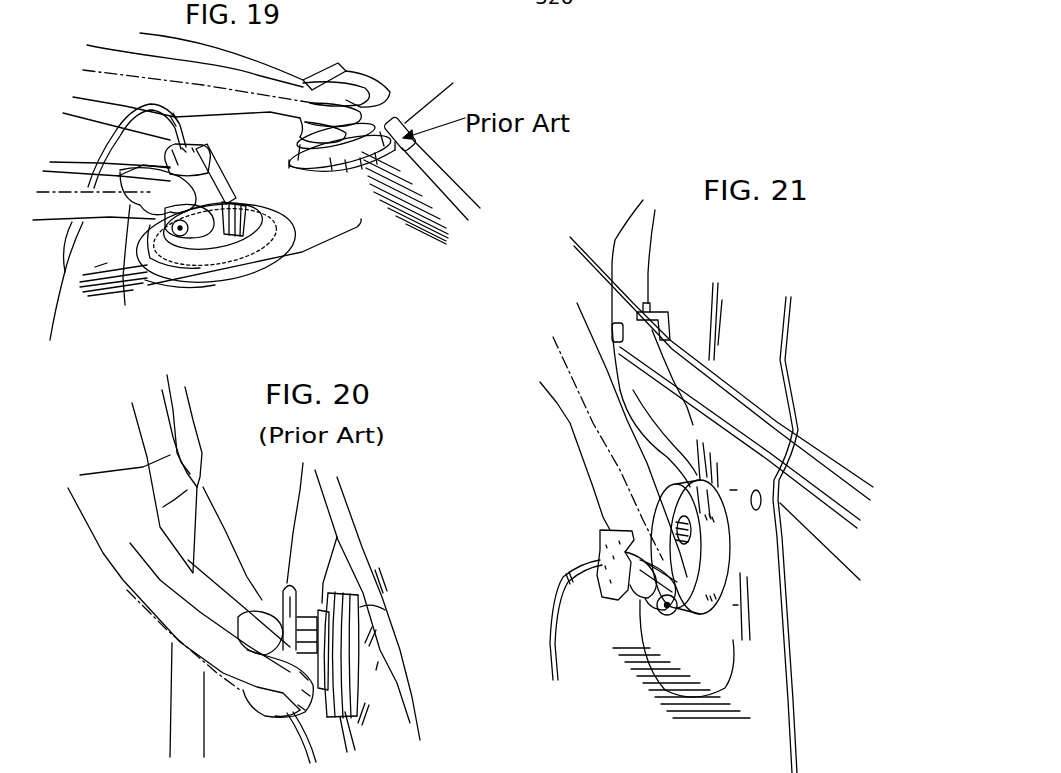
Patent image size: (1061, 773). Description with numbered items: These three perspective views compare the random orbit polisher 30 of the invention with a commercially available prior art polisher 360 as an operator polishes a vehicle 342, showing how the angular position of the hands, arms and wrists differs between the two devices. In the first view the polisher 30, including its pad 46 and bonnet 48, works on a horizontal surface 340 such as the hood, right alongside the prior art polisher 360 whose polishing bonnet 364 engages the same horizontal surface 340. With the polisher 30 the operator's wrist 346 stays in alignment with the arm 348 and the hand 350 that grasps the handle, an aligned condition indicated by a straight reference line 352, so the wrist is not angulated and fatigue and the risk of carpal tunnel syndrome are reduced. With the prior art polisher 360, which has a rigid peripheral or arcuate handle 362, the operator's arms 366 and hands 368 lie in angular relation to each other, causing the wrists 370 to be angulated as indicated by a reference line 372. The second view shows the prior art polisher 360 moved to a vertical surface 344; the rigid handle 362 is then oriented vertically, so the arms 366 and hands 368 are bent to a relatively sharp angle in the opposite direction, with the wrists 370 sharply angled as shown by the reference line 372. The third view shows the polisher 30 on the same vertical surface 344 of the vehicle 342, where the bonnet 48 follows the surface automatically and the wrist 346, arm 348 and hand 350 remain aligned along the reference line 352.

In FIG. 19, the polisher 30 is at (206, 132).
In FIG. 19, the pad 46 is at (220, 268).
In FIG. 19, the bonnet 48 is at (253, 260).
In FIG. 19, the horizontal surface 340 is at (296, 246).
In FIG. 19, the vehicle 342 is at (425, 96).
In FIG. 20, the vehicle 342 is at (335, 505).
In FIG. 21, the vehicle 342 is at (608, 233).
In FIG. 20, the vertical surface 344 is at (377, 703).
In FIG. 21, the vertical surface 344 is at (753, 668).
In FIG. 19, the wrist 346 is at (114, 267).
In FIG. 19, the arm 348 is at (50, 215).
In FIG. 21, the arm 348 is at (575, 437).
In FIG. 19, the hand 350 is at (173, 278).
In FIG. 21, the hand 350 is at (688, 573).
In FIG. 19, the reference line 352 is at (88, 185).
In FIG. 21, the reference line 352 is at (580, 402).
In FIG. 19, the prior art polisher 360 is at (346, 60).
In FIG. 20, the rigid handle 362 is at (287, 587).
In FIG. 19, the polishing bonnet 364 is at (432, 147).
In FIG. 20, the polishing bonnet 364 is at (350, 620).
In FIG. 19, the arms 366 is at (150, 56).
In FIG. 20, the arms 366 is at (113, 550).
In FIG. 19, the hands 368 is at (352, 90).
In FIG. 20, the hands 368 is at (273, 708).
In FIG. 19, the wrists 370 is at (288, 84).
In FIG. 20, the wrists 370 is at (250, 693).
In FIG. 19, the reference line 372 is at (102, 70).
In FIG. 20, the reference line 372 is at (180, 607).